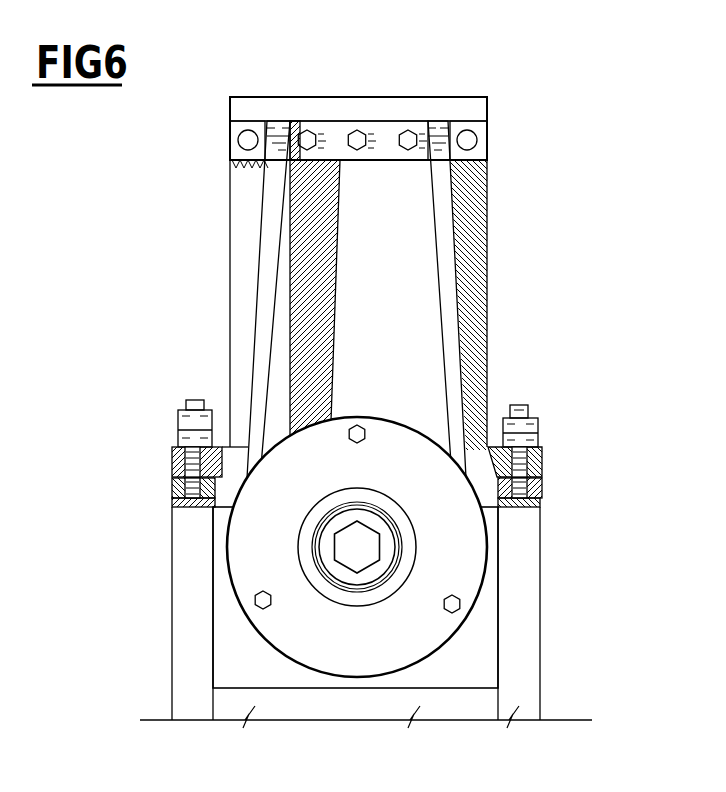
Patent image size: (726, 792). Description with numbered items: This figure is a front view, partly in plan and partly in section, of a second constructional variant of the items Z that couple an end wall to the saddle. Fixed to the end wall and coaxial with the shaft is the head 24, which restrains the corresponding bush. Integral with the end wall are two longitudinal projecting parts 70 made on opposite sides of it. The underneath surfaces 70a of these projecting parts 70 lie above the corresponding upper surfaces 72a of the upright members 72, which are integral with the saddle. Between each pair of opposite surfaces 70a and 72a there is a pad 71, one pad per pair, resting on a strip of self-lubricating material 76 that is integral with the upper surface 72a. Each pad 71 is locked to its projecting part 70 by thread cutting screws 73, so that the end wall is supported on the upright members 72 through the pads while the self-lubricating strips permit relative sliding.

The longitudinal projecting part 70 is at (256, 238).
The underneath surface 70a is at (172, 476).
The pad 71 is at (542, 486).
The upright member 72 is at (533, 580).
The upper surface 72a is at (195, 505).
The thread cutting screw 73 is at (172, 450).
The strip of self-lubricating material 76 is at (535, 508).
The head 24 is at (248, 560).